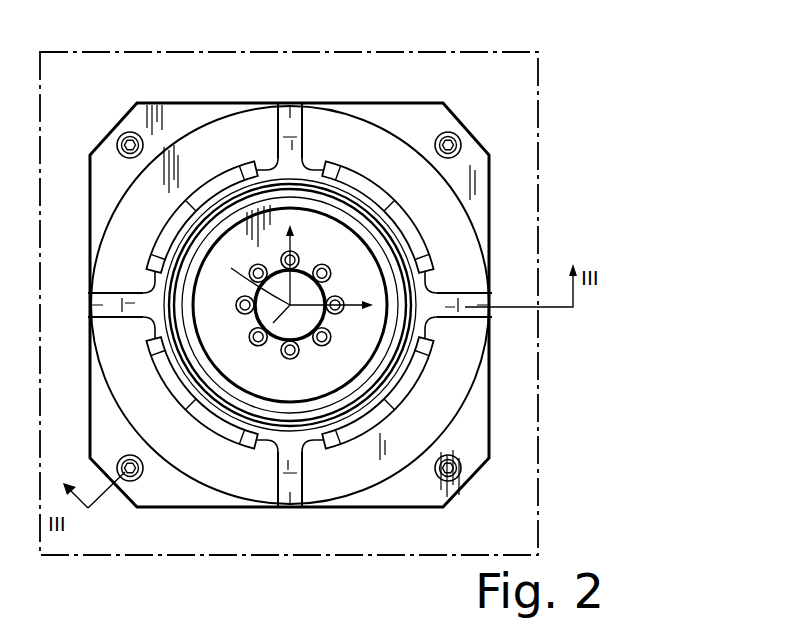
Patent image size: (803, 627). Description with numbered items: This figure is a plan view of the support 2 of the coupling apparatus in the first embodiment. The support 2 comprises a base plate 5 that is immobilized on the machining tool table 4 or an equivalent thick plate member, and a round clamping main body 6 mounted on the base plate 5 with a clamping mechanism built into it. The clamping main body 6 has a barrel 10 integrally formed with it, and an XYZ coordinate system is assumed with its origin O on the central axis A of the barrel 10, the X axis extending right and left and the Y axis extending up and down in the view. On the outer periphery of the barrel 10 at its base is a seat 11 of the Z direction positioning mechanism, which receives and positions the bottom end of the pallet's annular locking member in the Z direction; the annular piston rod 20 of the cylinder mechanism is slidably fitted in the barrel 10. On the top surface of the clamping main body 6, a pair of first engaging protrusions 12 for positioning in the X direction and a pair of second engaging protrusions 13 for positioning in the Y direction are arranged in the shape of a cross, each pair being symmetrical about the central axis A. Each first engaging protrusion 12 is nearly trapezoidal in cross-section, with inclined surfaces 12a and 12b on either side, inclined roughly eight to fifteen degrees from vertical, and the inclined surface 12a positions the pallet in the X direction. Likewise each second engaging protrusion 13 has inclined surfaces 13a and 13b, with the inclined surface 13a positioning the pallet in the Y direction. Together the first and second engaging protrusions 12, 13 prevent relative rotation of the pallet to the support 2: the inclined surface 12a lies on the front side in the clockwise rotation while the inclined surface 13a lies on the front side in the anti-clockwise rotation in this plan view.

The support 2 is at (304, 261).
The machining tool table 4 is at (540, 80).
The base plate 5 is at (489, 173).
The clamping main body 6 is at (461, 203).
The barrel 10 is at (307, 304).
The seat 11 is at (420, 360).
The first engaging protrusion 12 is at (297, 308).
The inclined surface 12a is at (306, 125).
The inclined surface 12b is at (277, 130).
The second engaging protrusion 13 is at (289, 308).
The inclined surface 13a is at (460, 288).
The inclined surface 13b is at (466, 321).
The piston rod 20 is at (337, 396).